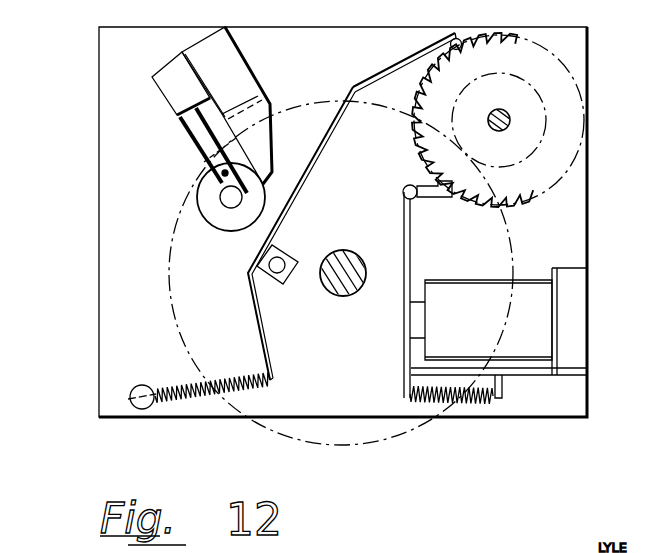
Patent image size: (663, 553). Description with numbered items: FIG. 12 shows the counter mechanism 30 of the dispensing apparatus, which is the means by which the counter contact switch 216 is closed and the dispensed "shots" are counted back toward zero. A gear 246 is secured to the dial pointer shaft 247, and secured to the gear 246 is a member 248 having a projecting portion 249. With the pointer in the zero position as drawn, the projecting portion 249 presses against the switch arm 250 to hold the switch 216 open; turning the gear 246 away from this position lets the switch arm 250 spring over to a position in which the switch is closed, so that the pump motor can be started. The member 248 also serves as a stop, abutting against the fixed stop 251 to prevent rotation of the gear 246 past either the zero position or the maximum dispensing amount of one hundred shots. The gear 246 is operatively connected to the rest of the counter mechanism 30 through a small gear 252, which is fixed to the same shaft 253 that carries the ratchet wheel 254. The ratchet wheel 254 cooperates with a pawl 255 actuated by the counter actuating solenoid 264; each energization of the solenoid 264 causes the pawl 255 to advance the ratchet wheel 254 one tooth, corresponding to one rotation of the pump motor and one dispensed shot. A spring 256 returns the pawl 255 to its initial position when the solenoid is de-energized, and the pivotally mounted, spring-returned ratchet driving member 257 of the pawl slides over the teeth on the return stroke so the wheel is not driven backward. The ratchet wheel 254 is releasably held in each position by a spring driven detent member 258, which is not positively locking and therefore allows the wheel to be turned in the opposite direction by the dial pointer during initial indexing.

The counter mechanism 30 is at (90, 245).
The counter contact switch 216 is at (181, 83).
The gear 246 is at (171, 313).
The dial pointer shaft 247 is at (333, 293).
The member 248 is at (227, 230).
The projecting portion 249 is at (226, 207).
The switch arm 250 is at (203, 151).
The fixed stop 251 is at (241, 67).
The small gear 252 is at (548, 130).
The shaft 253 is at (495, 132).
The ratchet wheel 254 is at (565, 180).
The pawl 255 is at (411, 251).
The spring 256 is at (470, 402).
The ratchet driving member 257 is at (420, 185).
The spring driven detent member 258 is at (395, 60).
The counter actuating solenoid 264 is at (468, 324).